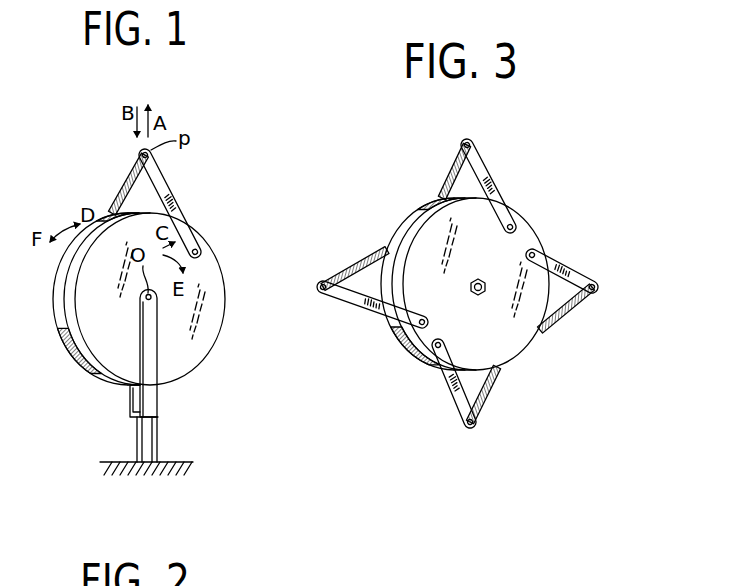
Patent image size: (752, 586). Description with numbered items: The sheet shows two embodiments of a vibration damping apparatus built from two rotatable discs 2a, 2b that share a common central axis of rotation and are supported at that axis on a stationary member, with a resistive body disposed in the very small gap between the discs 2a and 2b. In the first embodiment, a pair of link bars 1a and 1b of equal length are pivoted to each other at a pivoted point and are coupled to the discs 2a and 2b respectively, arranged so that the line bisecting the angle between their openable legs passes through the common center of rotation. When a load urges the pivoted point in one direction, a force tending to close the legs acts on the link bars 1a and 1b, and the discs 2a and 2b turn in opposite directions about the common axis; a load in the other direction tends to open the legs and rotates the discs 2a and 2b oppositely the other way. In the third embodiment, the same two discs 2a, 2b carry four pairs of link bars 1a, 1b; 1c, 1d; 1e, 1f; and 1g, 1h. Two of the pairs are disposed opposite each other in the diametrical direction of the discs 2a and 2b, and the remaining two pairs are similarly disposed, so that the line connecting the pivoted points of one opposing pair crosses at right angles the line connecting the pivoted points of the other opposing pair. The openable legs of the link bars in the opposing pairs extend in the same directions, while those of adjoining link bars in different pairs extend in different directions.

In FIG. 1, the link bar 1a is at (178, 200).
In FIG. 3, the link bar 1a is at (493, 190).
In FIG. 1, the link bar 1b is at (125, 185).
In FIG. 3, the link bar 1b is at (450, 165).
In FIG. 3, the link bar 1c is at (443, 384).
In FIG. 3, the link bar 1d is at (499, 386).
In FIG. 3, the link bar 1e is at (564, 270).
In FIG. 3, the link bar 1f is at (573, 304).
In FIG. 3, the link bar 1g is at (355, 305).
In FIG. 3, the link bar 1h is at (358, 262).
In FIG. 1, the disc 2a is at (205, 325).
In FIG. 3, the disc 2a is at (527, 333).
In FIG. 1, the disc 2b is at (70, 342).
In FIG. 3, the disc 2b is at (412, 218).